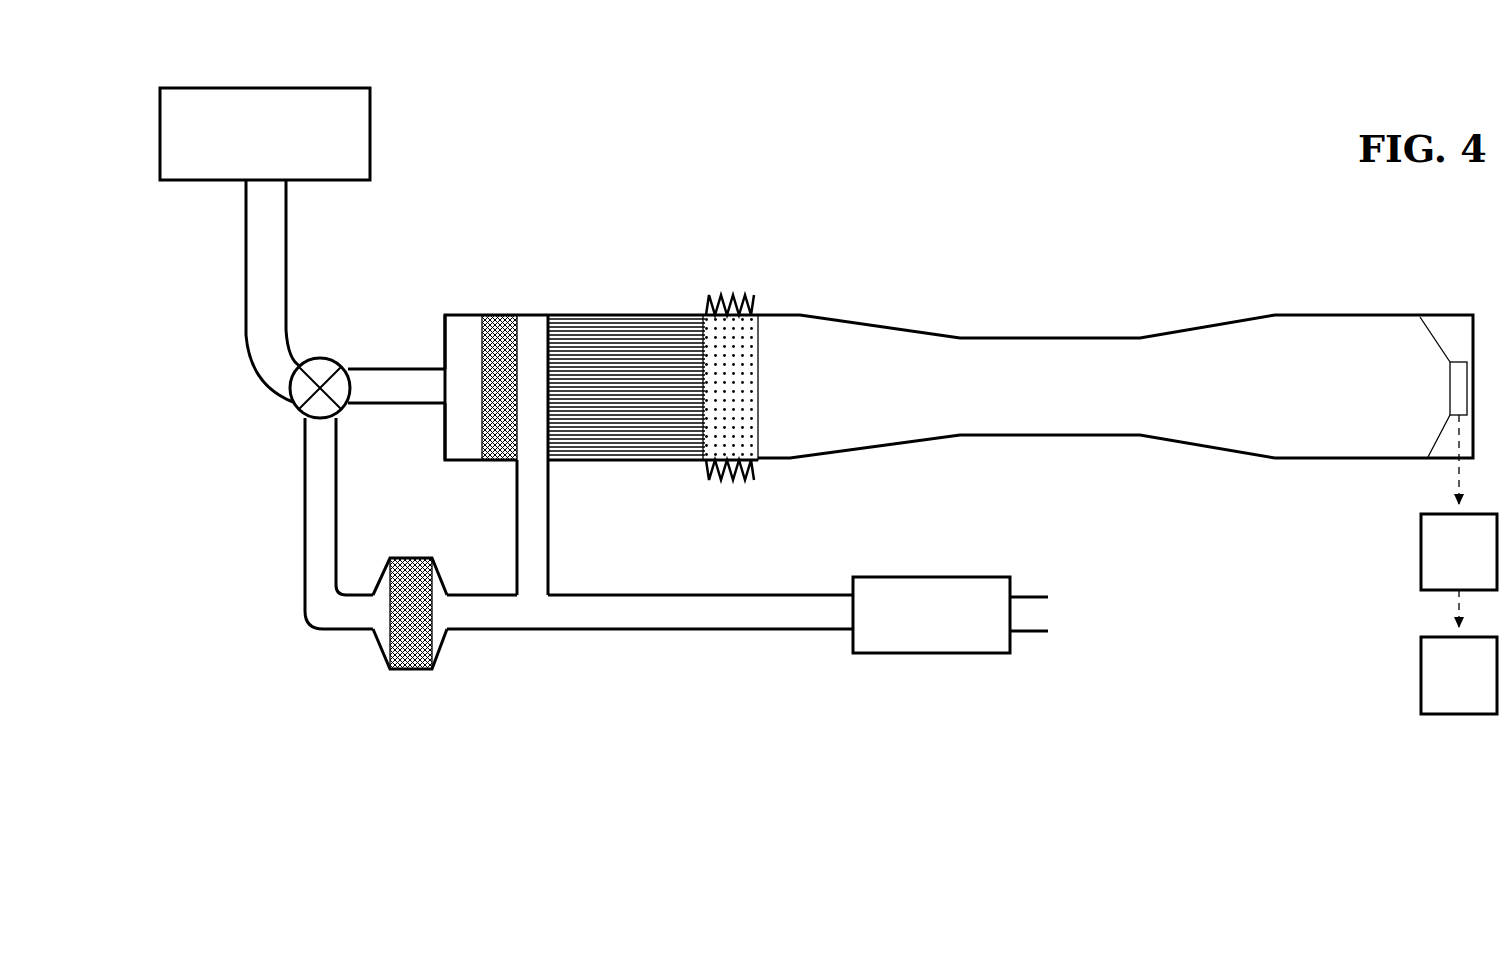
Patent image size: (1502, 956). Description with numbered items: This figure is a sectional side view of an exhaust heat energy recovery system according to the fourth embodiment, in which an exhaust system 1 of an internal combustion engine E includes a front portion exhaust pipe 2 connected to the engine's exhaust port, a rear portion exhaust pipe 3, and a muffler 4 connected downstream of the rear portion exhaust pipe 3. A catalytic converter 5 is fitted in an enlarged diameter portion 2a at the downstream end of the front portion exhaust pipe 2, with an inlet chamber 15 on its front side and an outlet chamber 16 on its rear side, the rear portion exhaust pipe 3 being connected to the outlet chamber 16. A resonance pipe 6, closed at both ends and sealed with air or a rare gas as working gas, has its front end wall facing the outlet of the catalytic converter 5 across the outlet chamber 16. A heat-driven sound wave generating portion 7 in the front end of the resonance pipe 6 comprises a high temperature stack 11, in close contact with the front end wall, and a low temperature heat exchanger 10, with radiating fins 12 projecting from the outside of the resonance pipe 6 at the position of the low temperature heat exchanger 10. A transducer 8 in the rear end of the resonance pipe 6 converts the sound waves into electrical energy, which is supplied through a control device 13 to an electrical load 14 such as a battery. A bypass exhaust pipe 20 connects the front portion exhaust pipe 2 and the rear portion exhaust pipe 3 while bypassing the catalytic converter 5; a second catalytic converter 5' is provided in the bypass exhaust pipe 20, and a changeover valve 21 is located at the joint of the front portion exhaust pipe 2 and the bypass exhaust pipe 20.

The exhaust system 1 is at (875, 282).
The internal combustion engine E is at (277, 156).
The front portion exhaust pipe 2 is at (378, 385).
The enlarged diameter portion 2a is at (466, 315).
The changeover valve 21 is at (297, 388).
The catalytic converter 5 is at (499, 351).
The inlet chamber 15 is at (463, 430).
The sound wave generating portion 7 is at (653, 307).
The high temperature stack 11 is at (587, 333).
The low temperature heat exchanger 10 is at (720, 336).
The radiating fins 12 is at (752, 478).
The resonance pipe 6 is at (1005, 338).
The transducer 8 is at (1458, 365).
The control device 13 is at (1443, 568).
The electrical load 14 is at (1443, 691).
The outlet chamber 16 is at (537, 425).
The rear portion exhaust pipe 3 is at (598, 614).
The muffler 4 is at (941, 632).
The bypass exhaust pipe 20 is at (352, 614).
The second catalytic converter 5' is at (402, 583).